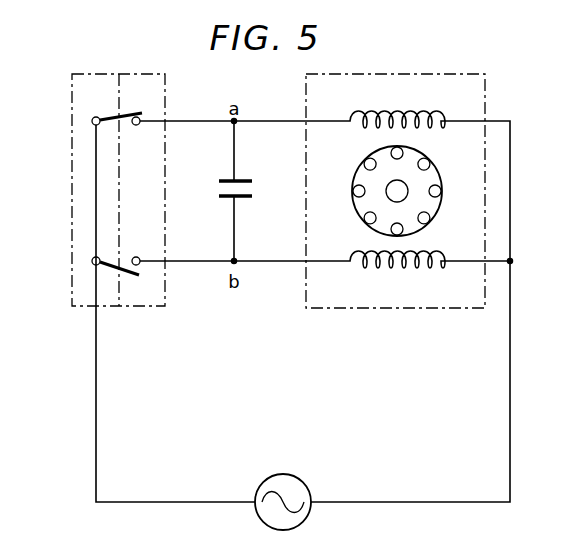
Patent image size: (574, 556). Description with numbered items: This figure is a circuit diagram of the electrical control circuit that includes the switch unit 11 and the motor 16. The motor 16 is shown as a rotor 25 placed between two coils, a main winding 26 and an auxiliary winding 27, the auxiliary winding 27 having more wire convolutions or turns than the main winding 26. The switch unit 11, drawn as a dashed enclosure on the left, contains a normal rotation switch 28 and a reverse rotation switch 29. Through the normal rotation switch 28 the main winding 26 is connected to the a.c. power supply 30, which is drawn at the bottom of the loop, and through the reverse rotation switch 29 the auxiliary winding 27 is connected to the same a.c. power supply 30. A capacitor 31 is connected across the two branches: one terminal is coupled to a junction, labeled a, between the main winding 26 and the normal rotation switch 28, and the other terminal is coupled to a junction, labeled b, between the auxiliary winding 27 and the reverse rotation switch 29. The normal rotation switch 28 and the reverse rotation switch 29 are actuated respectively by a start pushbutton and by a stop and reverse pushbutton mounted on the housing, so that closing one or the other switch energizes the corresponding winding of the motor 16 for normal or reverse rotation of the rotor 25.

The switch unit 11 is at (65, 82).
The motor 16 is at (485, 82).
The rotor 25 is at (442, 200).
The main winding 26 is at (446, 121).
The auxiliary winding 27 is at (402, 272).
The normal rotation switch 28 is at (108, 112).
The reverse rotation switch 29 is at (110, 271).
The a.c. power supply 30 is at (308, 486).
The capacitor 31 is at (253, 188).